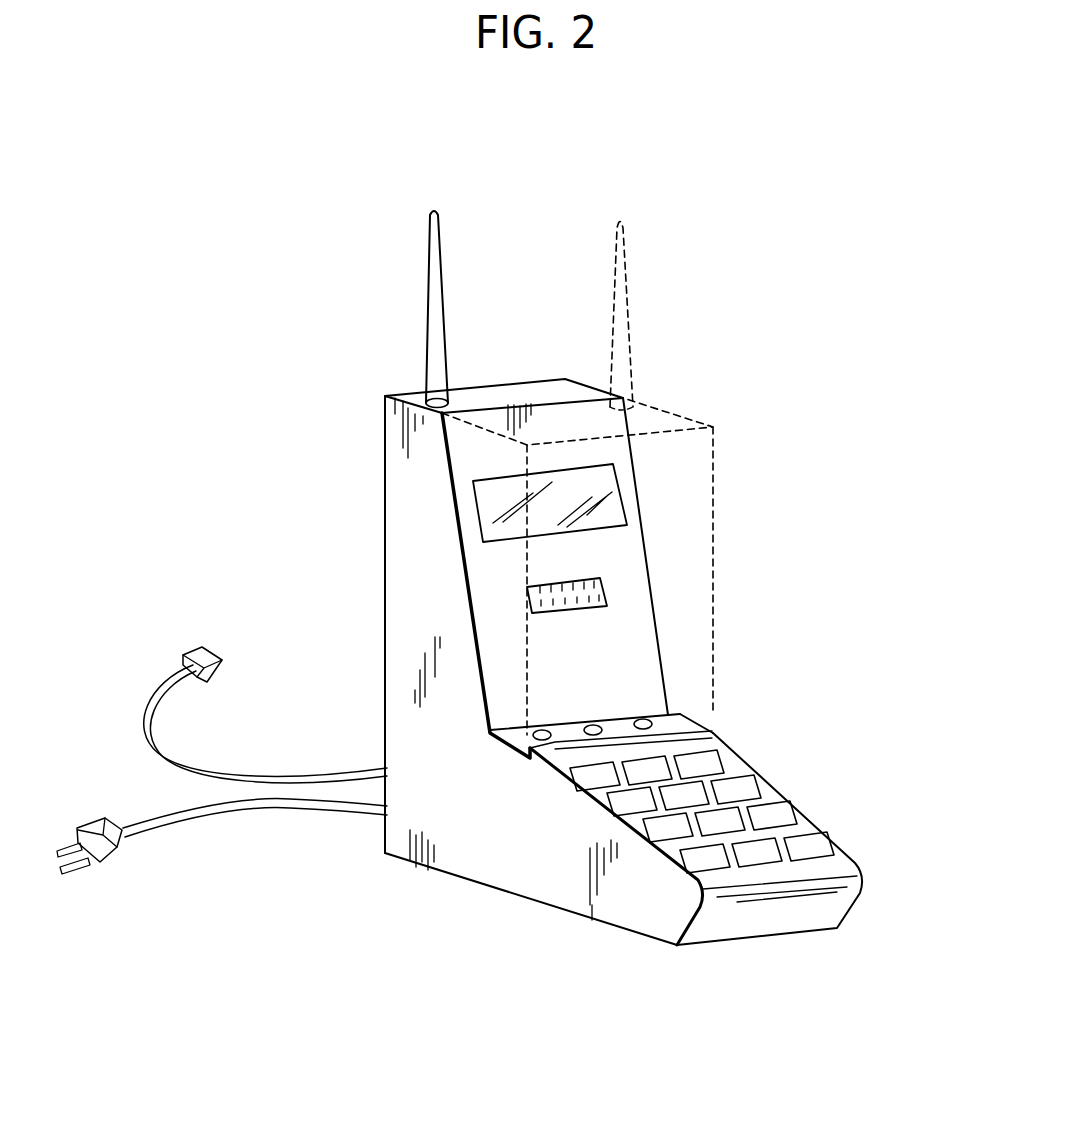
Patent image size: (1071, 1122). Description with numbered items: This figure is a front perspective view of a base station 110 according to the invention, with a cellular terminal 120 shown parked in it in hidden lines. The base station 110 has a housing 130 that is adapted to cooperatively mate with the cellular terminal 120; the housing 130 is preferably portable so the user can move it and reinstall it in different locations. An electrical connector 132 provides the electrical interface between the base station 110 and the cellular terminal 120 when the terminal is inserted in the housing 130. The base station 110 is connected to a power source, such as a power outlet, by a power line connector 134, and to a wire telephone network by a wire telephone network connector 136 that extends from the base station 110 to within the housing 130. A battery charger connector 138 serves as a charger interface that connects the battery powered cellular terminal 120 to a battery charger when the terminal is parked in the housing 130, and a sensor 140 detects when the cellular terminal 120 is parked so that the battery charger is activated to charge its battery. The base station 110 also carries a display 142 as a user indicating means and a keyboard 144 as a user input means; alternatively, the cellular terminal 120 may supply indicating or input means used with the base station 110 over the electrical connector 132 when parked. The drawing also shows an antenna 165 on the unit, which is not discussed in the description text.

The base station 110 is at (712, 318).
The cellular terminal 120 is at (713, 427).
The housing 130 is at (475, 870).
The electrical connector 132 is at (600, 583).
The power line connector 134 is at (200, 820).
The wire telephone network connector 136 is at (142, 718).
The battery charger connector 138 is at (655, 722).
The sensor 140 is at (593, 727).
The display 142 is at (483, 498).
The keyboard 144 is at (832, 853).
The antenna 165 is at (427, 288).